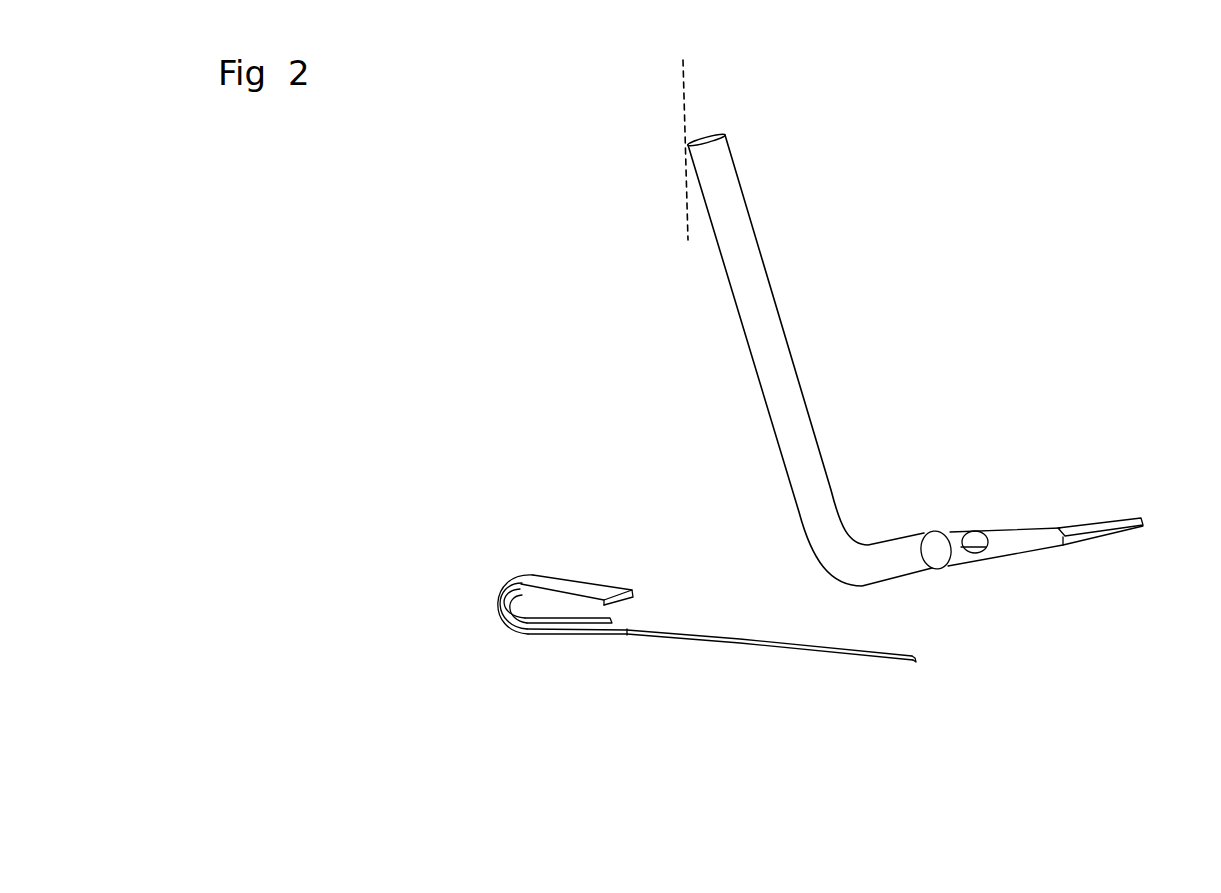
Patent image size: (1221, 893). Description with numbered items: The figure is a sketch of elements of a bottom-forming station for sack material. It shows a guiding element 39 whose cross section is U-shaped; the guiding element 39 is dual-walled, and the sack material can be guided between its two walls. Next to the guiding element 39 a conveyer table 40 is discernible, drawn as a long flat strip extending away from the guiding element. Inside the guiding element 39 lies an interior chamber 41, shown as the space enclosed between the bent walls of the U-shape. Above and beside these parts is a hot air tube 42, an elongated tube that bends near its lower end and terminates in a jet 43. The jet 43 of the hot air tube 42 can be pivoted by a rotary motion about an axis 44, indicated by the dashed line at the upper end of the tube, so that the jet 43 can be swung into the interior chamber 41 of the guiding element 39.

The guiding element 39 is at (546, 577).
The conveyer table 40 is at (808, 653).
The interior chamber 41 is at (537, 607).
The hot air tube 42 is at (788, 392).
The jet 43 is at (1130, 515).
The axis 44 is at (687, 109).